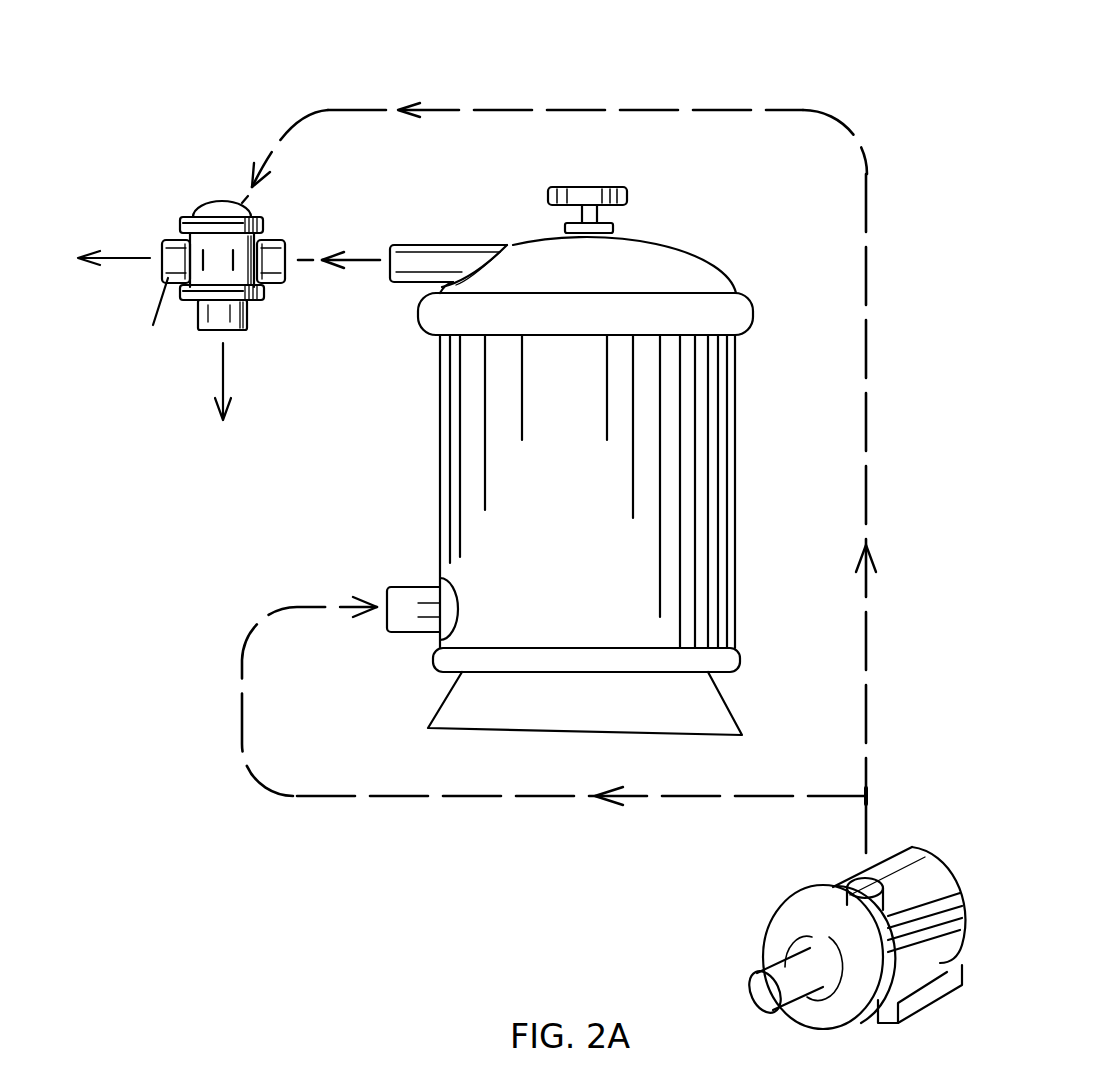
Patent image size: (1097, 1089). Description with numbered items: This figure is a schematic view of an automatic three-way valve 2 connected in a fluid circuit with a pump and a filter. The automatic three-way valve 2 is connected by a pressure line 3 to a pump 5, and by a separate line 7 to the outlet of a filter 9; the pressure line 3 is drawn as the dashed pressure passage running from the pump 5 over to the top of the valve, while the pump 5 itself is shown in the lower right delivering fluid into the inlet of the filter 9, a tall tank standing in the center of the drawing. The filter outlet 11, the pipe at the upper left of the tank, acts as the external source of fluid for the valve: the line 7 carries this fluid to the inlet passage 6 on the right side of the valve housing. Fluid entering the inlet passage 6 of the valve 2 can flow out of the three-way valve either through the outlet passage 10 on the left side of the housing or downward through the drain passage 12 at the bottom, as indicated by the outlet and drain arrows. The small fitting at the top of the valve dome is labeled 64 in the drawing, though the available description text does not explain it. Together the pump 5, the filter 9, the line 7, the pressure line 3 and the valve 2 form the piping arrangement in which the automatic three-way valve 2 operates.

The automatic three-way valve 2 is at (178, 185).
The pressure line 3 is at (352, 102).
The pump 5 is at (749, 885).
The inlet passage 6 is at (275, 283).
The line 7 is at (358, 267).
The filter 9 is at (761, 390).
The outlet passage 10 is at (163, 235).
The filter outlet 11 is at (403, 283).
The drain passage 12 is at (247, 330).
The pressure port on valve 64 is at (242, 198).